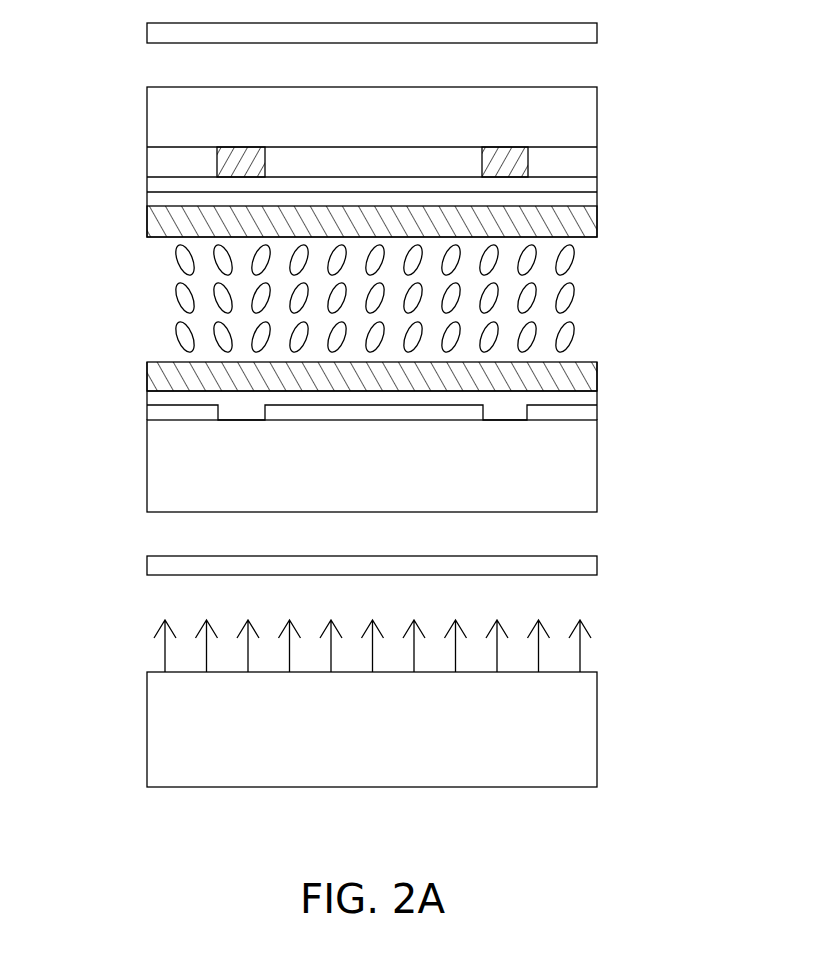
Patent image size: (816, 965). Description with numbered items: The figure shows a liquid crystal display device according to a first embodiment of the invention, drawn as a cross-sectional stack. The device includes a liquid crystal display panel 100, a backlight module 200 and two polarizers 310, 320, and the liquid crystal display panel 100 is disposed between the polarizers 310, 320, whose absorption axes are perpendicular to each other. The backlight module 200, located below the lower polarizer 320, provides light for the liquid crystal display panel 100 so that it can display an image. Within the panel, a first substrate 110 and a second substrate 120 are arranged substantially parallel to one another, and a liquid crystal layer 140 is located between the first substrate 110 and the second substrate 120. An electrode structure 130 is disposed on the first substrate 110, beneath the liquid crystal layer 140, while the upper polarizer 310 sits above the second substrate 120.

The liquid crystal display panel 100 is at (360, 299).
The first substrate 110 is at (597, 457).
The second substrate 120 is at (597, 137).
The electrode structure 130 is at (597, 413).
The liquid crystal layer 140 is at (597, 243).
The backlight module 200 is at (122, 673).
The polarizer 310 is at (597, 33).
The polarizer 320 is at (597, 565).